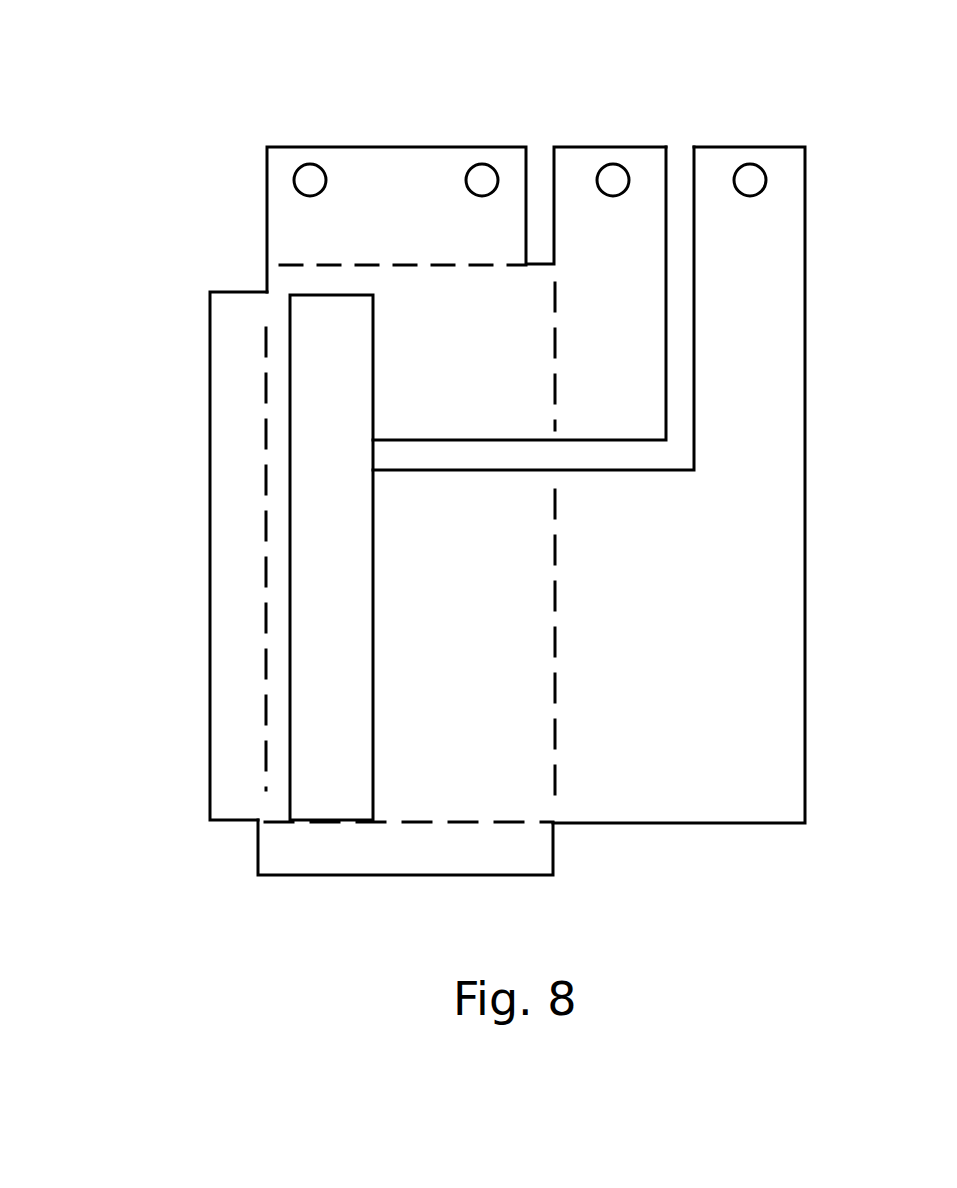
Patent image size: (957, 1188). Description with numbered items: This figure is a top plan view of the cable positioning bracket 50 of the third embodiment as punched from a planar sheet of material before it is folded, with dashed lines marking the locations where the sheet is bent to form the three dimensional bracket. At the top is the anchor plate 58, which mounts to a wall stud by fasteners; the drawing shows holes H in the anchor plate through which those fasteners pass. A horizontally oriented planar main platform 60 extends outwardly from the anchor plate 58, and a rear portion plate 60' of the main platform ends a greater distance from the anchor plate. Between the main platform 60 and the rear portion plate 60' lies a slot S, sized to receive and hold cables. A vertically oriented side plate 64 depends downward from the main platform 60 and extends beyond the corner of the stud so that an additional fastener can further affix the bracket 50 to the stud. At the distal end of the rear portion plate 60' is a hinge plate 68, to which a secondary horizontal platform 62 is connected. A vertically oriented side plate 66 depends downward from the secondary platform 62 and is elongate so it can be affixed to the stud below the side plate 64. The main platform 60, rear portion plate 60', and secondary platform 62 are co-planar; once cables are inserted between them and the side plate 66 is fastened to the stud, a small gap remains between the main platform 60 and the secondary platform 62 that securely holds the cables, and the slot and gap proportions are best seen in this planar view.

The cable positioning bracket 50 is at (202, 158).
The anchor plate 58 is at (403, 222).
The holes H is at (482, 164).
The main platform 60 is at (519, 293).
The rear portion plate 60' is at (212, 559).
The secondary horizontal platform 62 is at (484, 643).
The side plate 64 is at (629, 381).
The side plate 66 is at (690, 646).
The hinge plate 68 is at (555, 848).
The slot S is at (342, 576).